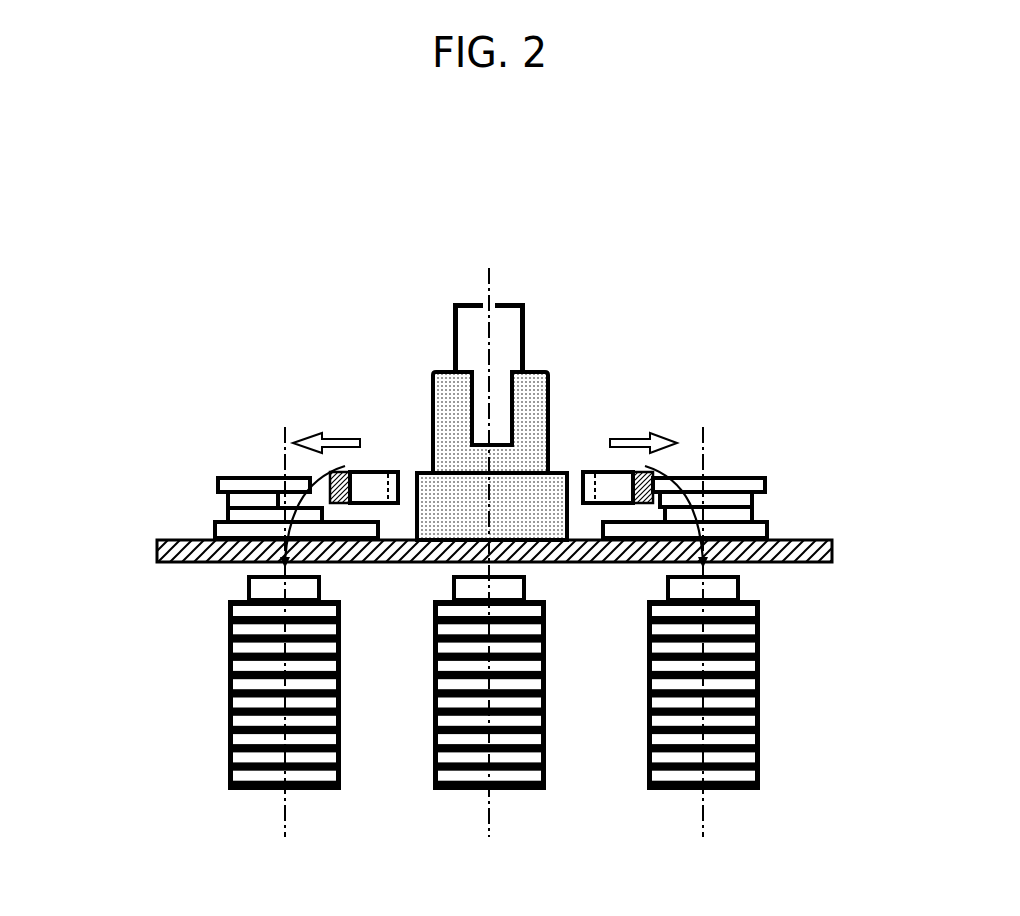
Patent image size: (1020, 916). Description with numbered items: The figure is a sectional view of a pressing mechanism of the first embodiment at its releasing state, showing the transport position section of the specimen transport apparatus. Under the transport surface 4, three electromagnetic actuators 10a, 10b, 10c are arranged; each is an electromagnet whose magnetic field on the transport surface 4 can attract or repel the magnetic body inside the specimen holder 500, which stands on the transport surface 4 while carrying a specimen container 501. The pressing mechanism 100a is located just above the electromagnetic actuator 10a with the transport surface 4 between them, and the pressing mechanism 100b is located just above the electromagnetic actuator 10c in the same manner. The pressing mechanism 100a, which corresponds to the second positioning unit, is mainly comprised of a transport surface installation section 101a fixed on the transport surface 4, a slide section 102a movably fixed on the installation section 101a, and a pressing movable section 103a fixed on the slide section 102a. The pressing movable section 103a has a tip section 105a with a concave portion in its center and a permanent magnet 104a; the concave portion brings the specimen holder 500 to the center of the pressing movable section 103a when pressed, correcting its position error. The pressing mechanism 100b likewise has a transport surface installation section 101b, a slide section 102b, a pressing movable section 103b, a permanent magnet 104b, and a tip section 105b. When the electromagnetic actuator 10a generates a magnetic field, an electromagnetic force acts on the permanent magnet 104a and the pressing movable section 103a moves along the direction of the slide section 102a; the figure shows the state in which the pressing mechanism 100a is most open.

The transport surface 4 is at (157, 550).
The electromagnetic actuator 10a is at (248, 793).
The electromagnetic actuator 10b is at (483, 793).
The electromagnetic actuator 10c is at (683, 793).
The pressing mechanism 100a is at (204, 402).
The pressing mechanism 100b is at (777, 401).
The transport surface installation section 101a is at (215, 527).
The transport surface installation section 101b is at (763, 532).
The slide section 102a is at (228, 505).
The slide section 102b is at (758, 510).
The pressing movable section 103a is at (260, 478).
The pressing movable section 103b is at (715, 478).
The permanent magnet 104a is at (342, 479).
The permanent magnet 104b is at (640, 485).
The tip section 105a is at (382, 470).
The tip section 105b is at (590, 470).
The specimen holder 500 is at (437, 372).
The specimen container 501 is at (510, 305).